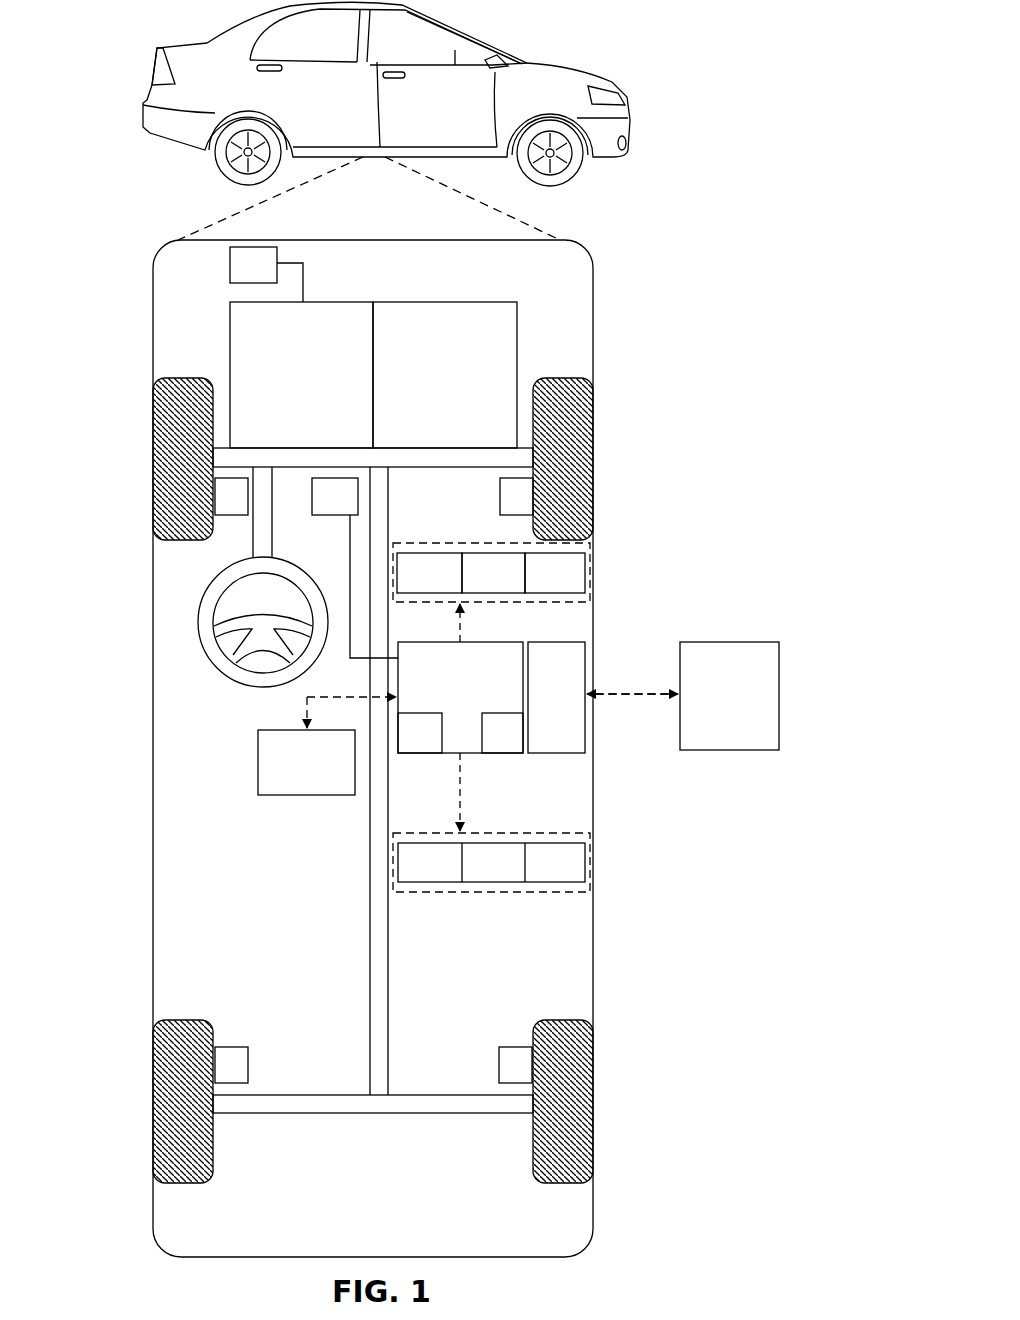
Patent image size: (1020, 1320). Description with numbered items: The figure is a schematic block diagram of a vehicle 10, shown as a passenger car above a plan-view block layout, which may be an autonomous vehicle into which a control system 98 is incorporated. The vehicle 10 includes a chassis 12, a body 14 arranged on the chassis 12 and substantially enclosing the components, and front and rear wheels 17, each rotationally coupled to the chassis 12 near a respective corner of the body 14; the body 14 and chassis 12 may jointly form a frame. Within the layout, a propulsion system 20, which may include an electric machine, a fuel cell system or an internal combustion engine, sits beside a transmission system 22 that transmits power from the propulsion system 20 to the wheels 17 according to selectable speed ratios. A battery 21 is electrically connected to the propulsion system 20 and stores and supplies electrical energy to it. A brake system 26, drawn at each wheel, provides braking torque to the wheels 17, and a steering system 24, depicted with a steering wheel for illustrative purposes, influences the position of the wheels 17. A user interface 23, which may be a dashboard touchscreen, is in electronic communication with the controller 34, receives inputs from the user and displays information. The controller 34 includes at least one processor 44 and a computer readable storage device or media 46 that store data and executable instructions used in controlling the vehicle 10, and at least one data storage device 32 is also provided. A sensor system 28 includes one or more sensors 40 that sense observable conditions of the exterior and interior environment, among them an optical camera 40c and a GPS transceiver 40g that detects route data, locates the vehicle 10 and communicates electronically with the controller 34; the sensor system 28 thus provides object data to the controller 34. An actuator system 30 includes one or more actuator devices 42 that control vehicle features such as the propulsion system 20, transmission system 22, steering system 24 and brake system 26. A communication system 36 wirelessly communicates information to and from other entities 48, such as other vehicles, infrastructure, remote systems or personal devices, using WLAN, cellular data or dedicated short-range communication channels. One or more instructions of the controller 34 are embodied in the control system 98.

The vehicle 10 is at (152, 80).
The chassis 12 is at (368, 962).
The body 14 is at (153, 822).
The front and rear wheels 17 is at (187, 378).
The propulsion system 20 is at (317, 390).
The battery 21 is at (238, 247).
The transmission system 22 is at (430, 390).
The user interface 23 is at (348, 511).
The steering system 24 is at (281, 534).
The brake system 26 is at (244, 511).
The sensor system 28 is at (470, 541).
The actuator system 30 is at (480, 893).
The data storage device 32 is at (291, 777).
The controller 34 is at (445, 694).
The communication system 36 is at (541, 704).
The sensors 40 is at (417, 586).
The optical camera 40c is at (478, 586).
The GPS transceiver 40g is at (538, 586).
The actuator devices 42 is at (417, 877).
The processor 44 is at (407, 749).
The computer readable storage device or media 46 is at (489, 749).
The other entities 48 is at (715, 707).
The control system 98 is at (694, 279).